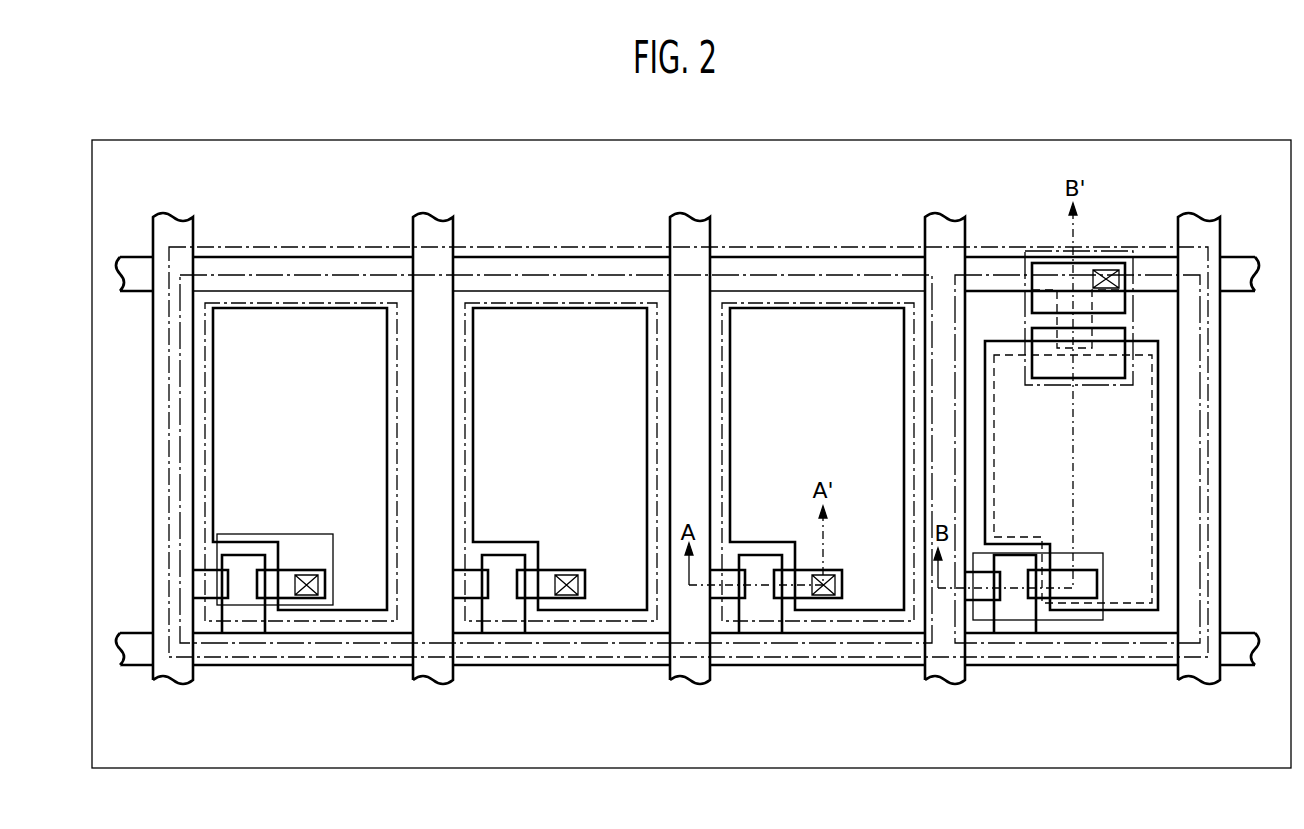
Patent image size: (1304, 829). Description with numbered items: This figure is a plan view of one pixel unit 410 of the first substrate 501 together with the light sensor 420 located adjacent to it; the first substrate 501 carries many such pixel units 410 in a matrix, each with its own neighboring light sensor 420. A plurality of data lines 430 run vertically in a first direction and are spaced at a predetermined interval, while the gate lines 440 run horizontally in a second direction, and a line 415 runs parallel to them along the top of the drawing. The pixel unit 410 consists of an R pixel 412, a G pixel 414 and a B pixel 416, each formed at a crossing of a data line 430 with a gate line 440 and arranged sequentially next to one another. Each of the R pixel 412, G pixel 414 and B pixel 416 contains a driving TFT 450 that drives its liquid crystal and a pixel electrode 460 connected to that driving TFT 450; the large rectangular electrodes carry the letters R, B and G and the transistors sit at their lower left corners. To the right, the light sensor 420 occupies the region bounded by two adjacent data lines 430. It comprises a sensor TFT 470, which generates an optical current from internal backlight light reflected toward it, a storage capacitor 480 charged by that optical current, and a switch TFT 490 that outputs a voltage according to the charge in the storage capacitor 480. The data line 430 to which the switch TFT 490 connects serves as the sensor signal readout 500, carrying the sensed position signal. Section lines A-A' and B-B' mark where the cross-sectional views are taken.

The pixel unit 410 is at (180, 412).
The R pixel 412 is at (309, 302).
The G pixel 414 is at (532, 302).
The B pixel 416 is at (822, 302).
The common line 415 is at (139, 266).
The light sensor 420 is at (1205, 388).
The data line 430 is at (187, 226).
The gate line 440 is at (142, 640).
The driving TFT 450 is at (238, 606).
The pixel electrode 460 is at (355, 613).
The sensor TFT 470 is at (1136, 267).
The storage capacitor 480 is at (1139, 613).
The switch TFT 490 is at (1018, 619).
The sensor signal readout 500 is at (948, 226).
The first substrate 501 is at (747, 770).